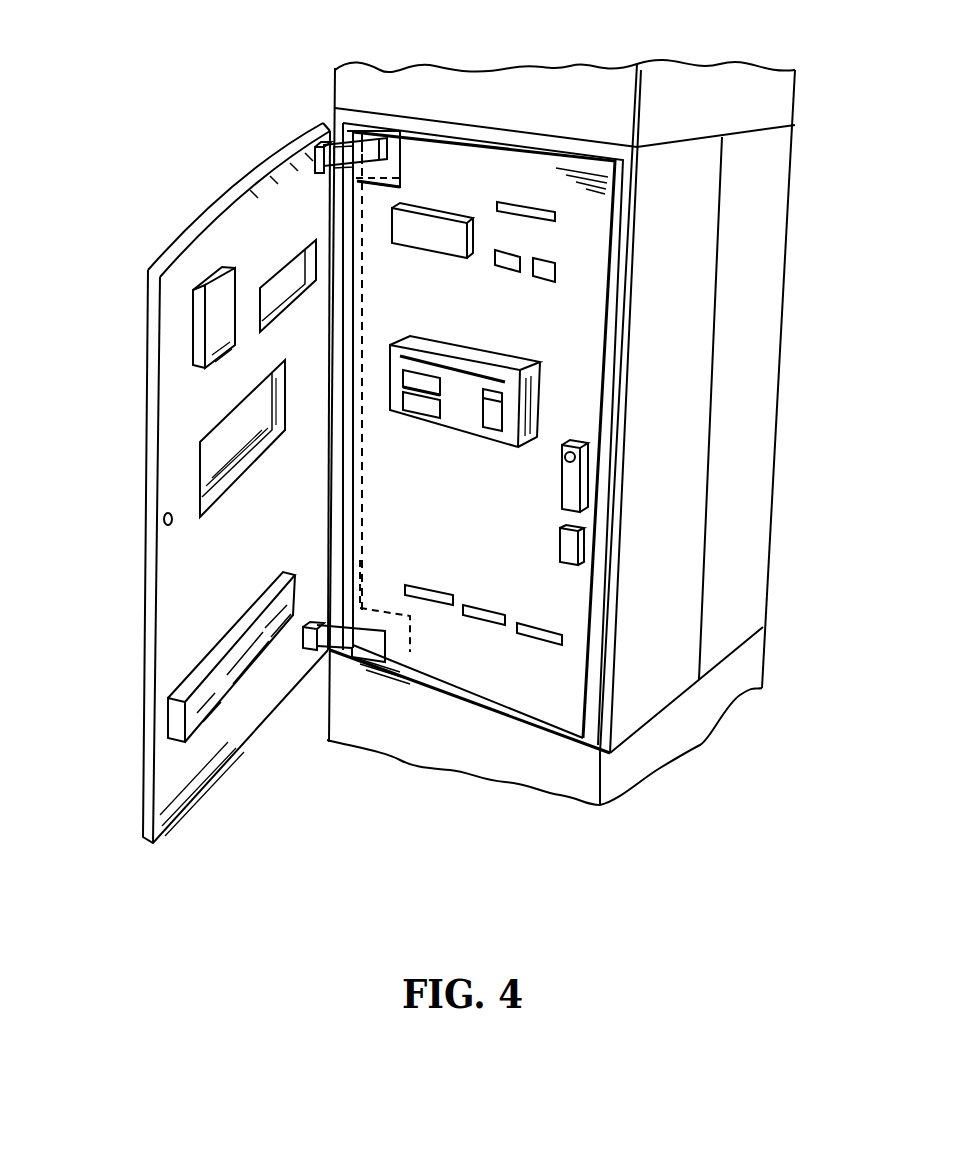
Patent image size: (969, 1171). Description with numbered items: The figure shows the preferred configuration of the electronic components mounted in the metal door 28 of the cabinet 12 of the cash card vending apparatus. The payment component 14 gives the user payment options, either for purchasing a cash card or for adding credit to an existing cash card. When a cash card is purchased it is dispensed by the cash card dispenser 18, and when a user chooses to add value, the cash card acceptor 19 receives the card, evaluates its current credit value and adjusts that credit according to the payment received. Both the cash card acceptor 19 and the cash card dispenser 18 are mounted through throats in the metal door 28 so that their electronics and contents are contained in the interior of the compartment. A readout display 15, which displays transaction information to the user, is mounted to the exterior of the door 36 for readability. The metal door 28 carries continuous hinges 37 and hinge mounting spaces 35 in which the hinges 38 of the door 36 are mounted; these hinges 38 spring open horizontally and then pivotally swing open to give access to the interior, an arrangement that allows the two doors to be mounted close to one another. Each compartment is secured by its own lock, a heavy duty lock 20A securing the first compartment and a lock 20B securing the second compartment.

The cabinet 12 is at (806, 308).
The payment component 14 is at (530, 402).
The readout display 15 is at (465, 218).
The cash card dispenser 18 is at (190, 683).
The cash card acceptor 19 is at (197, 348).
The heavy duty lock 20A is at (567, 480).
The lock 20B is at (165, 522).
The metal door 28 is at (448, 162).
The hinge mounting spaces 35 is at (398, 147).
The second compartment's door 36 is at (205, 217).
The continuous hinges 37 is at (363, 212).
The hinges 38 is at (315, 122).